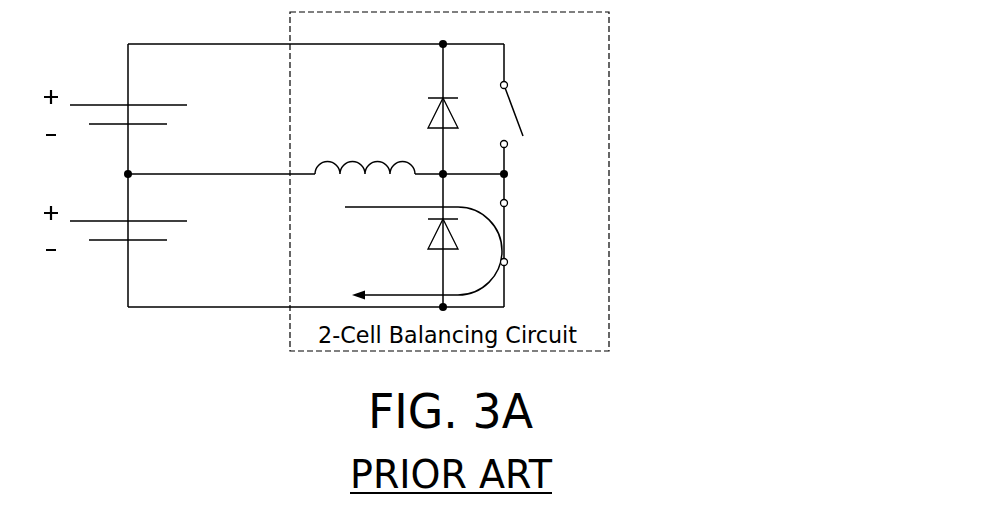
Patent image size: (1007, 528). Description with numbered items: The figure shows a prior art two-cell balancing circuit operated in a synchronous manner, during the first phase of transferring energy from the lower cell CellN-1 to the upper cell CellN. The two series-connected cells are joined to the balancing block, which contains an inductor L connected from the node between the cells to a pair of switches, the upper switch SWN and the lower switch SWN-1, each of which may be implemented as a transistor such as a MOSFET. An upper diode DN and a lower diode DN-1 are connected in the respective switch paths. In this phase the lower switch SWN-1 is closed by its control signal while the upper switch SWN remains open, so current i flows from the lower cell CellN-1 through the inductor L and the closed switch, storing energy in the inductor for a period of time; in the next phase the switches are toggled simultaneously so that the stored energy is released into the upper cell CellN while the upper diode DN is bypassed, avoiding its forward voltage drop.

The cell N CellN is at (147, 115).
The cell N-1 CellN-1 is at (158, 229).
The inductor L is at (365, 181).
The current i is at (423, 199).
The diode D N DN is at (455, 125).
The diode D N-1 DN-1 is at (462, 245).
The switch SW N SWN is at (727, 115).
The switch SW N-1 SWN-1 is at (727, 238).